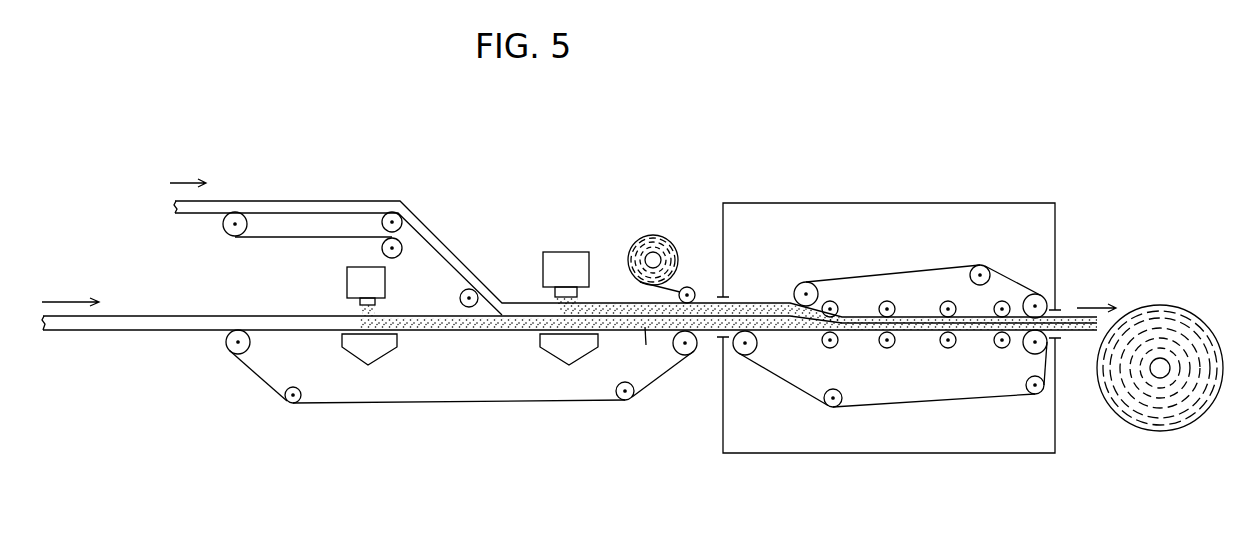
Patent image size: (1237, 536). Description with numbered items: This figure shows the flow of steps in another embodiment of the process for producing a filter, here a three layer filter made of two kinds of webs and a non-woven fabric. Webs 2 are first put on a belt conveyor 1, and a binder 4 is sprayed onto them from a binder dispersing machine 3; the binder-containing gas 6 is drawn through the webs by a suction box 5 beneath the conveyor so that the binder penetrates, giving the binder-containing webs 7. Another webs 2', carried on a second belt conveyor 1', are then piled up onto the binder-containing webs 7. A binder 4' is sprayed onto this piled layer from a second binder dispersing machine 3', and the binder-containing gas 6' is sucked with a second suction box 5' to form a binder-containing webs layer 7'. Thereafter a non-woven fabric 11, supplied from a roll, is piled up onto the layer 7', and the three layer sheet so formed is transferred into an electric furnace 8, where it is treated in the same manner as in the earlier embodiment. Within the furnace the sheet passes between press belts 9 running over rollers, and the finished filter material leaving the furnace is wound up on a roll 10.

The belt conveyor 1 is at (457, 377).
The belt conveyor 1' is at (350, 259).
The webs 2 is at (569, 343).
The webs 2' is at (635, 231).
The binder dispersing machine 3 is at (332, 272).
The binder dispersing machine 3' is at (546, 240).
The binder 4 is at (335, 287).
The binder 4' is at (542, 268).
The suction box 5 is at (383, 359).
The suction box 5' is at (553, 359).
The binder-containing gas 6 is at (393, 296).
The binder-containing gas 6' is at (542, 289).
The binder-containing webs 7 is at (656, 388).
The binder-containing webs layer 7' is at (642, 253).
The electric furnace 8 is at (760, 218).
The press belts 9 is at (915, 270).
The wound product roll 10 is at (1166, 424).
The non-woven fabric 11 is at (648, 235).